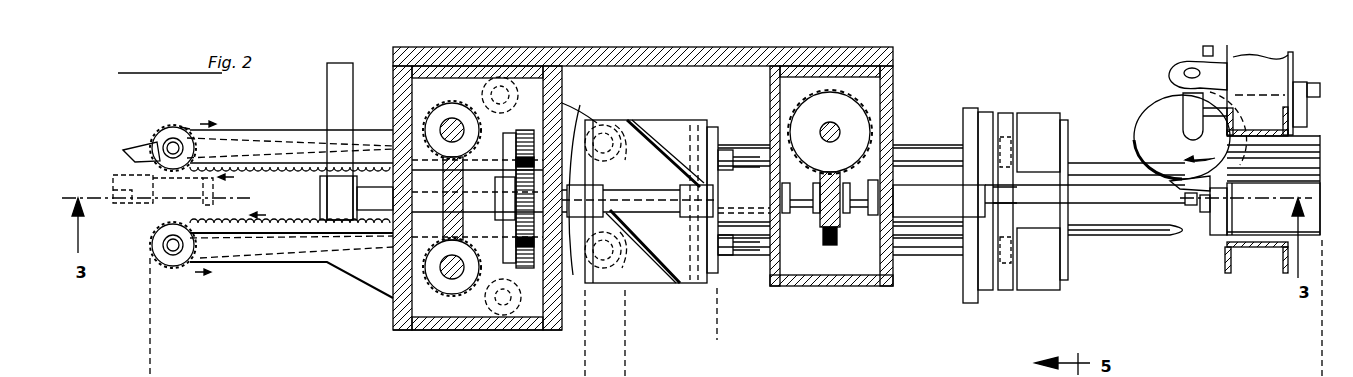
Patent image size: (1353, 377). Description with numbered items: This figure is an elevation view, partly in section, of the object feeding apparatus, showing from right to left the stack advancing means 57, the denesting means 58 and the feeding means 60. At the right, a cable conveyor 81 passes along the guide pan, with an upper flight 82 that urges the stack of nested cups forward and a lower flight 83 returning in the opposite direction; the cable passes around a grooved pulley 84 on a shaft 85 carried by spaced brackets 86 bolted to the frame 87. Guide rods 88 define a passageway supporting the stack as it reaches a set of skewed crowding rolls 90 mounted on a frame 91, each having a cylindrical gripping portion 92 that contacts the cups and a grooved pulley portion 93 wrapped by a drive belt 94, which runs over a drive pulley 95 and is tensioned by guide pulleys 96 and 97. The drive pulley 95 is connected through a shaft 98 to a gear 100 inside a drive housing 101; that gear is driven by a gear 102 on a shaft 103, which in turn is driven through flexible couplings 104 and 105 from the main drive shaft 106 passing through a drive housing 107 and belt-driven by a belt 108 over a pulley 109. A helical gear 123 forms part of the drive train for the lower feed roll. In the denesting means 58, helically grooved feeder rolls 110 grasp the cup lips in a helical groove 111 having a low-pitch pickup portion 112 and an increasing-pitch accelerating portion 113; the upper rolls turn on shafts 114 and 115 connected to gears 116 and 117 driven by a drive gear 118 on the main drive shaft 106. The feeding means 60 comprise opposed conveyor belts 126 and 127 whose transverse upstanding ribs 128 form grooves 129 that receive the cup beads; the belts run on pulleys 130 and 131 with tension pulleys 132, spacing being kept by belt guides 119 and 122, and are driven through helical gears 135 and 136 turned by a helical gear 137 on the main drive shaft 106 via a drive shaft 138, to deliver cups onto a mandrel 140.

The stack advancing means 57 is at (1320, 332).
The denesting means 58 is at (585, 328).
The feeding means 60 is at (625, 365).
The cable conveyor 81 is at (1138, 113).
The upper flight 82 is at (1297, 178).
The lower flight 83 is at (1312, 90).
The grooved pulley 84 is at (1168, 105).
The shaft 85 is at (1183, 122).
The brackets 86 is at (1186, 68).
The frame 87 is at (1267, 82).
The guide rods 88 is at (1115, 163).
The crowding rolls 90 is at (1048, 156).
The frame 91 is at (967, 107).
The cylindrical gripping portion 92 is at (1033, 125).
The grooved pulley portion 93 is at (987, 112).
The drive belt 94 is at (1008, 218).
The drive pulley 95 is at (1017, 192).
The guide pulley 96 is at (1007, 250).
The guide pulley 97 is at (1003, 153).
The shaft 98 is at (952, 205).
The gear 100 is at (830, 141).
The drive housing 101 is at (770, 97).
The gear 102 is at (833, 246).
The shaft 103 is at (760, 205).
The flexible coupling 104 is at (604, 190).
The flexible coupling 105 is at (690, 215).
The main drive shaft 106 is at (366, 206).
The drive housing 107 is at (393, 306).
The belt 108 is at (335, 97).
The pulley 109 is at (320, 185).
The feeder rolls 110 is at (690, 145).
The helical groove 111 is at (646, 128).
The pickup portion 112 is at (700, 124).
The accelerating portion 113 is at (622, 135).
The shaft 114 is at (732, 160).
The shaft 115 is at (733, 248).
The gear 116 is at (525, 132).
The gear 117 is at (528, 268).
The drive gear 118 is at (522, 225).
The belt guide 119 is at (229, 161).
The belt guide 122 is at (255, 238).
The helical gear 123 is at (851, 115).
The conveyor belt 126 is at (157, 138).
The conveyor belt 127 is at (157, 243).
The transverse upstanding ribs 128 is at (125, 150).
The transverse grooves 129 is at (176, 128).
The pulleys 130 is at (161, 129).
The pulleys 131 is at (605, 125).
The tension pulleys 132 is at (521, 332).
The helical gear 135 is at (442, 127).
The helical gear 136 is at (445, 284).
The helical gear 137 is at (443, 223).
The drive shaft 138 is at (412, 128).
The mandrel 140 is at (118, 182).